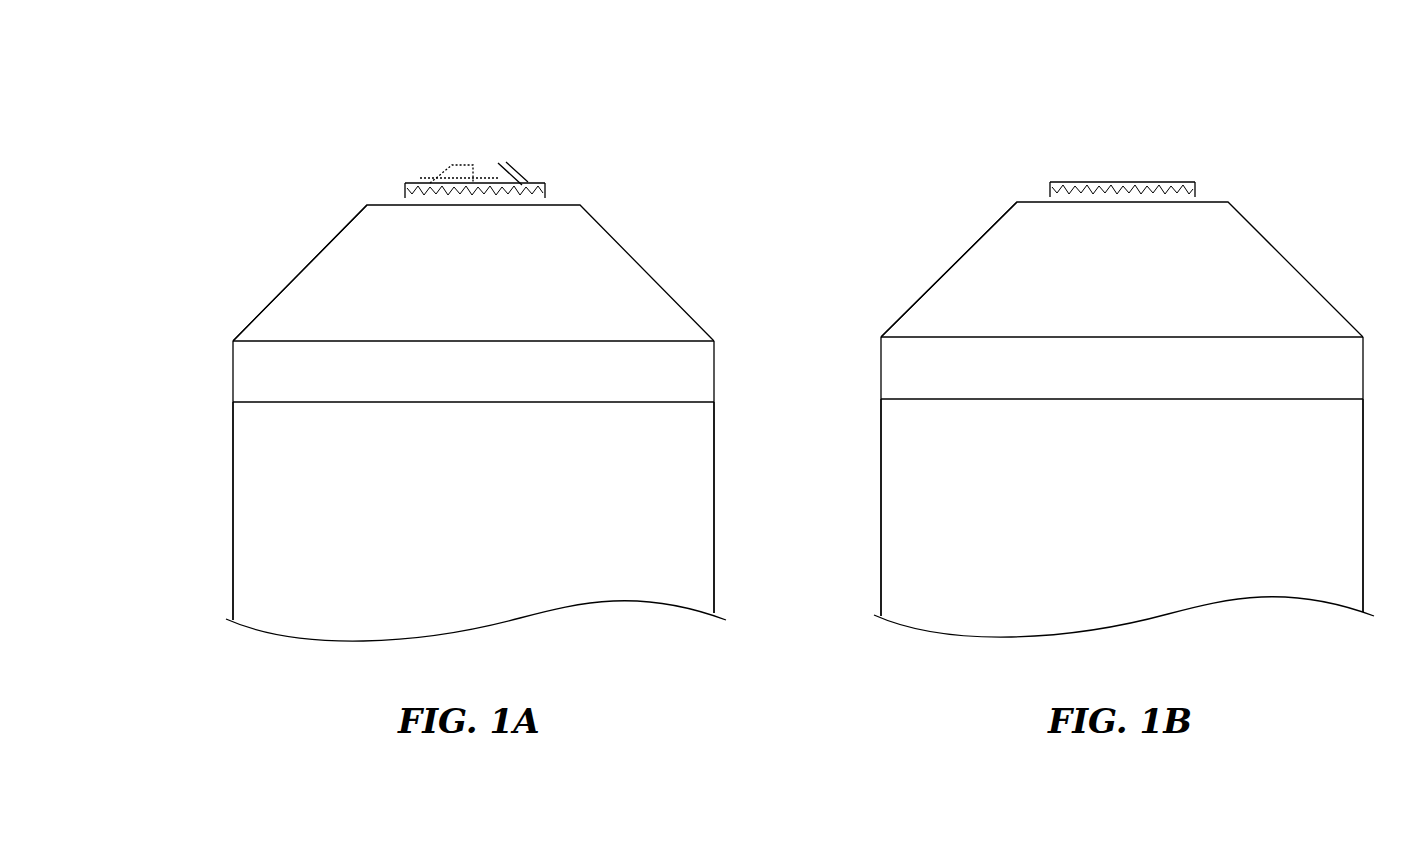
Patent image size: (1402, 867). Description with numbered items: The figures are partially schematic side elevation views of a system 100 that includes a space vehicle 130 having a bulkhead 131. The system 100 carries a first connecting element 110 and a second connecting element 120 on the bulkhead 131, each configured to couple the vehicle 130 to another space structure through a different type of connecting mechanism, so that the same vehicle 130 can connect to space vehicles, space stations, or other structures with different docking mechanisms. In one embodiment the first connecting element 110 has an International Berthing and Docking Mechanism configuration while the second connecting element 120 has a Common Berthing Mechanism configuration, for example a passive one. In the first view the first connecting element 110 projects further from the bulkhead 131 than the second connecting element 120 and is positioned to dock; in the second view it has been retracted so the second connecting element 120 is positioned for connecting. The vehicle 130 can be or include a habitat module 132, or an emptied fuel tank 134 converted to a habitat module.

In FIG. 1A, the system 100 is at (224, 127).
In FIG. 1B, the system 100 is at (874, 127).
In FIG. 1A, the first connecting element 110 is at (466, 143).
In FIG. 1A, the second connecting element 120 is at (545, 184).
In FIG. 1B, the second connecting element 120 is at (1195, 182).
In FIG. 1A, the space vehicle 130 is at (443, 423).
In FIG. 1B, the space vehicle 130 is at (1092, 419).
In FIG. 1A, the bulkhead 131 is at (322, 263).
In FIG. 1B, the bulkhead 131 is at (970, 259).
In FIG. 1A, the habitat module 132 is at (233, 512).
In FIG. 1B, the habitat module 132 is at (881, 512).
In FIG. 1A, the fuel tank 134 is at (437, 511).
In FIG. 1B, the fuel tank 134 is at (1087, 507).